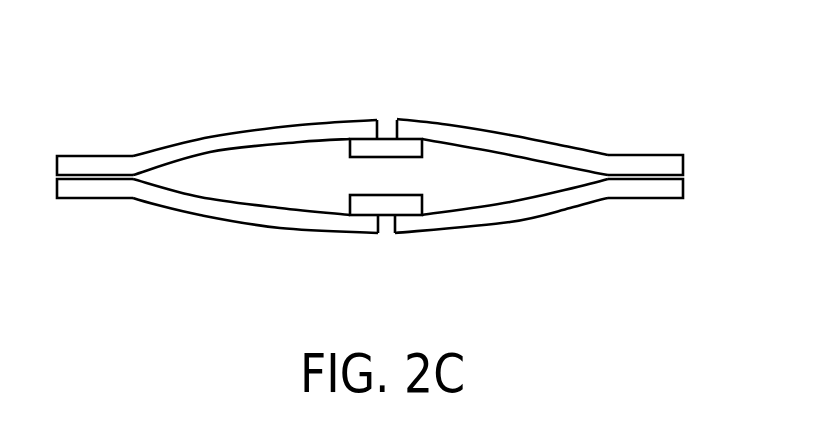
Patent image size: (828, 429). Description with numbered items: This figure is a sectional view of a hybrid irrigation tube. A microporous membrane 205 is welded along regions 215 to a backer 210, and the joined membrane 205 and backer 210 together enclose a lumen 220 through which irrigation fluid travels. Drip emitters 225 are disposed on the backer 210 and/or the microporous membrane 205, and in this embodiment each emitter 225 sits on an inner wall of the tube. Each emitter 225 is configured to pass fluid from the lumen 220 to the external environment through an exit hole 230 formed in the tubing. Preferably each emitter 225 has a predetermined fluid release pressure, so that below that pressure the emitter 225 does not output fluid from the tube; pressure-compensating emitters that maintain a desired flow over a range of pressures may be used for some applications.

The microporous membrane 205 is at (210, 142).
The backer 210 is at (207, 203).
The welded regions 215 is at (89, 135).
The lumen 220 is at (300, 166).
The drip emitter 225 is at (389, 150).
The exit hole 230 is at (388, 98).